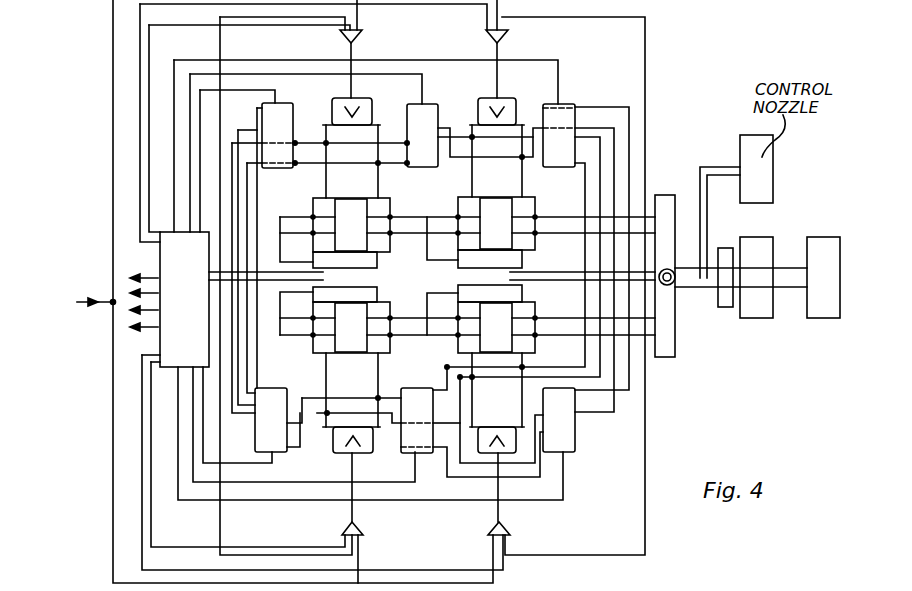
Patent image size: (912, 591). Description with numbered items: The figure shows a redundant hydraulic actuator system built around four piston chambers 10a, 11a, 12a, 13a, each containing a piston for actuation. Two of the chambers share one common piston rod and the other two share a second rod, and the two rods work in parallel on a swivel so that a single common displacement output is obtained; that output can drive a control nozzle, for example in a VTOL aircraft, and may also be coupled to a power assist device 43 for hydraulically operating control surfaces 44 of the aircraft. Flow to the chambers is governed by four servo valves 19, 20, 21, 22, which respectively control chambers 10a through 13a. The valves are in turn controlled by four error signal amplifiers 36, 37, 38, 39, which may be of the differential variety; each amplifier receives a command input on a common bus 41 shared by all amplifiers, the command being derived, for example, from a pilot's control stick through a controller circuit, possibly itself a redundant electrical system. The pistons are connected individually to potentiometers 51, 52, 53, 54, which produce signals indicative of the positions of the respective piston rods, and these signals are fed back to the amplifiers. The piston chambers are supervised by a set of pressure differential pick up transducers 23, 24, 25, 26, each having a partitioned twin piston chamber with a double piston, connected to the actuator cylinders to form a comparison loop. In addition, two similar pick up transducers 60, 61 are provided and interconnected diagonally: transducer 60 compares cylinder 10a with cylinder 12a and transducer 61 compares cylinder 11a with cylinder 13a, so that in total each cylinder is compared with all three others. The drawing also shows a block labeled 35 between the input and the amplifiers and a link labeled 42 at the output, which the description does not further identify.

The piston chamber 10a is at (378, 206).
The piston chamber 11a is at (520, 208).
The piston chamber 12a is at (535, 313).
The piston chamber 13a is at (378, 310).
The servo valve 19 is at (372, 111).
The servo valve 20 is at (508, 110).
The servo valve 21 is at (340, 440).
The servo valve 22 is at (488, 450).
The pressure differential pick up device 23 is at (430, 108).
The pressure differential pick up device 24 is at (565, 118).
The pressure differential pick up device 25 is at (412, 455).
The pressure differential pick up device 26 is at (262, 450).
The logic control unit 35 is at (198, 296).
The error signal amplifier 36 is at (362, 37).
The error signal amplifier 37 is at (508, 37).
The error signal amplifier 38 is at (364, 530).
The error signal amplifier 39 is at (510, 526).
The common bus 41 is at (110, 309).
The output link 42 is at (728, 295).
The power assist device 43 is at (757, 300).
The control surfaces 44 is at (822, 305).
The potentiometer 51 is at (360, 262).
The potentiometer 52 is at (512, 261).
The potentiometer 53 is at (358, 296).
The potentiometer 54 is at (510, 296).
The pick up transducer 60 is at (283, 108).
The pick up transducer 61 is at (578, 442).